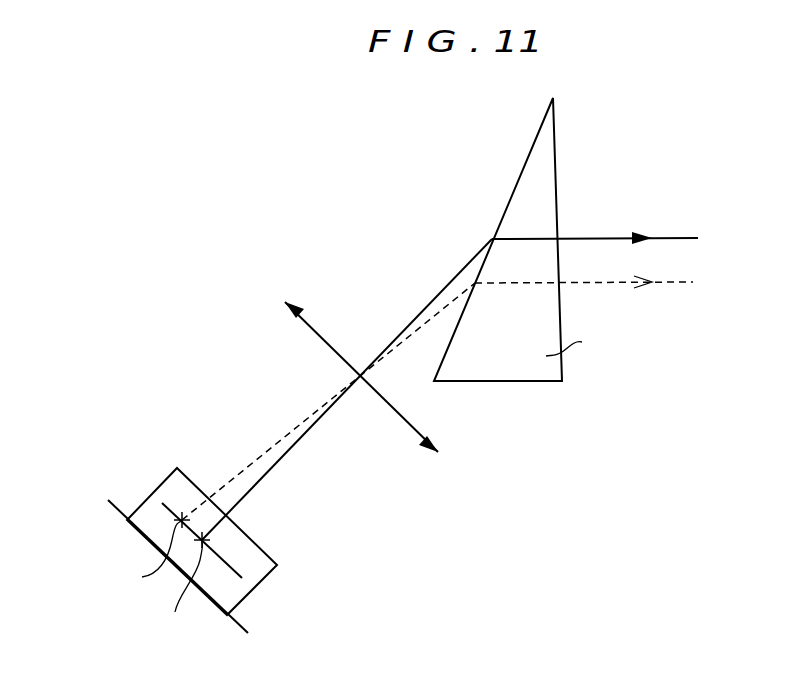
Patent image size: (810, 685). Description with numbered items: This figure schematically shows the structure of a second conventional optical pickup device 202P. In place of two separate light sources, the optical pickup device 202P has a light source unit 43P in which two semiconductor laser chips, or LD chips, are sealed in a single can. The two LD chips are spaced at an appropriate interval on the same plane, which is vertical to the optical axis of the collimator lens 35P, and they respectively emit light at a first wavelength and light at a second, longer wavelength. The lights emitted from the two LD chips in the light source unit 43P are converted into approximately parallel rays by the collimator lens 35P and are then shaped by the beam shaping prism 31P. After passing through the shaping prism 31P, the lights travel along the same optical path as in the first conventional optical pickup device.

The optical pickup device 202P is at (190, 247).
The beam shaping prism 31P is at (555, 209).
The collimator lens 35P is at (337, 353).
The light source unit 43P is at (153, 492).